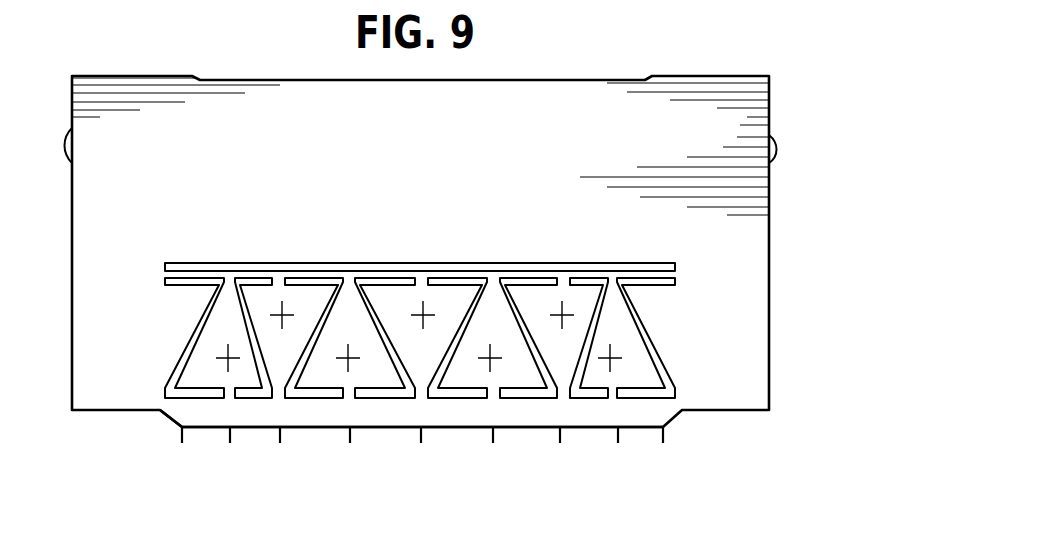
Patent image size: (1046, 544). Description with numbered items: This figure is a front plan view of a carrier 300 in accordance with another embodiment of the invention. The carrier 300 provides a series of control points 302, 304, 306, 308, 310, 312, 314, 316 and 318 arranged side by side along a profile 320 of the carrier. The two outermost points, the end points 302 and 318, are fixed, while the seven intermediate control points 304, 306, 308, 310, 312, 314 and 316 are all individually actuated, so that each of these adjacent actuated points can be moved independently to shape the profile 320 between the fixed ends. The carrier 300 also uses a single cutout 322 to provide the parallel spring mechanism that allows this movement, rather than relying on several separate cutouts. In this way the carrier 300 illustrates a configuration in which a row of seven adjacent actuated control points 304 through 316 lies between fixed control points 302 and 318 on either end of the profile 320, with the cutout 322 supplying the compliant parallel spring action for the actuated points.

The carrier 300 is at (808, 81).
The control point 302 is at (182, 443).
The control point 304 is at (229, 446).
The control point 306 is at (279, 446).
The control point 308 is at (349, 446).
The control point 310 is at (421, 446).
The control point 312 is at (493, 446).
The control point 314 is at (559, 446).
The control point 316 is at (619, 446).
The control point 318 is at (664, 446).
The profile 320 is at (166, 434).
The cutout 322 is at (643, 263).